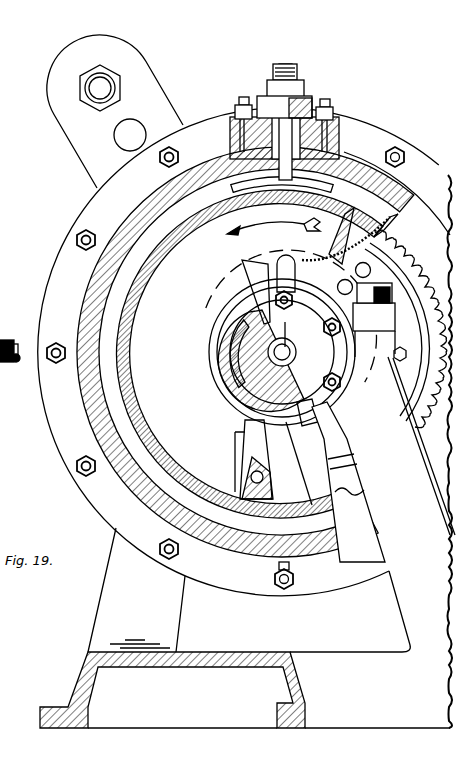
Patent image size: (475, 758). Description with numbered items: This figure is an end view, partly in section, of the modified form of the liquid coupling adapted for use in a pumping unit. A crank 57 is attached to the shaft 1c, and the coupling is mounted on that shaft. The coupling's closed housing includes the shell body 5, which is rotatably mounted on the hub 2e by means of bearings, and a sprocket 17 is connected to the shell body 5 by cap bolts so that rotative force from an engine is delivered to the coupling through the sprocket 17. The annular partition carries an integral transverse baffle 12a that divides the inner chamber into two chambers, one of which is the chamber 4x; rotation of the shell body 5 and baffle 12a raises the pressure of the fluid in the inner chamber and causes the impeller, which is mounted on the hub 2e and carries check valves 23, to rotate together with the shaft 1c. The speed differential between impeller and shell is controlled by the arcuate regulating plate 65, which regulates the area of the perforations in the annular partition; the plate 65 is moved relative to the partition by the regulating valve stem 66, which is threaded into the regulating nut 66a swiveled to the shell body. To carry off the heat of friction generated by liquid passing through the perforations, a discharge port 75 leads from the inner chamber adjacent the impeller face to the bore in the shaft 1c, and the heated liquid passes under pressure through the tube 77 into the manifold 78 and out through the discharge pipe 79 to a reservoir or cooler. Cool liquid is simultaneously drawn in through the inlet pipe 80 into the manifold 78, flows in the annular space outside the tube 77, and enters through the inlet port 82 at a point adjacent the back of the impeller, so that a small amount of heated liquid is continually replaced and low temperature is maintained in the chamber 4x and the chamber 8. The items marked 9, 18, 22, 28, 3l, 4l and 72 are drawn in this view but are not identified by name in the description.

The shell body 5 is at (357, 157).
The chamber 8 is at (245, 352).
The bolt 9 is at (403, 151).
The transverse baffle 12a is at (330, 252).
The sprocket 17 is at (406, 242).
The stud 18 is at (283, 62).
The ring 22 is at (240, 317).
The check valves 23 is at (250, 472).
The set screw 28 is at (300, 333).
The hub 2e is at (235, 335).
The shaft 1c is at (232, 360).
The bracket 3l is at (248, 452).
The member 4l is at (179, 378).
The chamber 4x is at (335, 482).
The crank 57 is at (163, 75).
The arcuate regulating plate 65 is at (331, 182).
The regulating valve stem 66 is at (296, 70).
The regulating nut 66a is at (303, 88).
The bolt 72 is at (103, 83).
The discharge port 75 is at (248, 410).
The tube 77 is at (233, 348).
The manifold 78 is at (11, 338).
The discharge pipe 79 is at (294, 349).
The inlet pipe 80 is at (303, 283).
The inlet port 82 is at (309, 422).